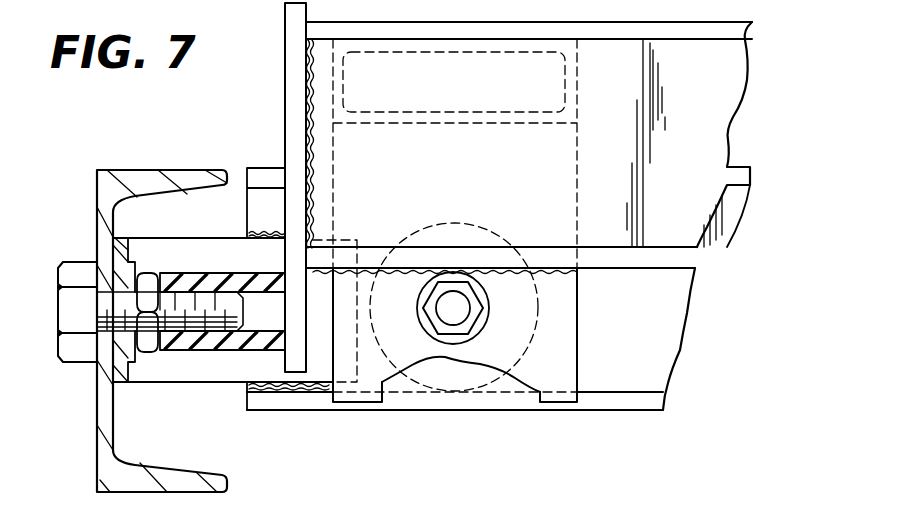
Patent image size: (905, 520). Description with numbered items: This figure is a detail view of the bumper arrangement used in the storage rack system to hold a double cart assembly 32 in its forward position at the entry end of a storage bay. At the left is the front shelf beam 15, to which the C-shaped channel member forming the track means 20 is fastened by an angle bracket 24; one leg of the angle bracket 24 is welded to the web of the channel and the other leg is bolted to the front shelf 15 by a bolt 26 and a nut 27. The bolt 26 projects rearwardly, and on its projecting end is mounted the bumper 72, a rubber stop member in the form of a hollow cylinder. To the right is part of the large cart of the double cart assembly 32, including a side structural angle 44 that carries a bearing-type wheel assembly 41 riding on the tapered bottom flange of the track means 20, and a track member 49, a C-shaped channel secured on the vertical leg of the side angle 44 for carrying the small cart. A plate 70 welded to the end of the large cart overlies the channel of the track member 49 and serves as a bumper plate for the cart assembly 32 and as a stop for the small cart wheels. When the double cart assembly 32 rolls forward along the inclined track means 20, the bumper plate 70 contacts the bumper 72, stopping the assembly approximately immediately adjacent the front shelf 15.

The front shelf beam 15 is at (100, 185).
The track means 20 is at (665, 353).
The angle bracket 24 is at (170, 253).
The bolt 26 is at (77, 268).
The nut 27 is at (147, 343).
The double cart assembly 32 is at (285, 149).
The wheel assembly 41 is at (468, 374).
The side structural angle 44 is at (568, 312).
The track member 49 is at (718, 137).
The bumper plate 70 is at (285, 97).
The bumper 72 is at (182, 273).